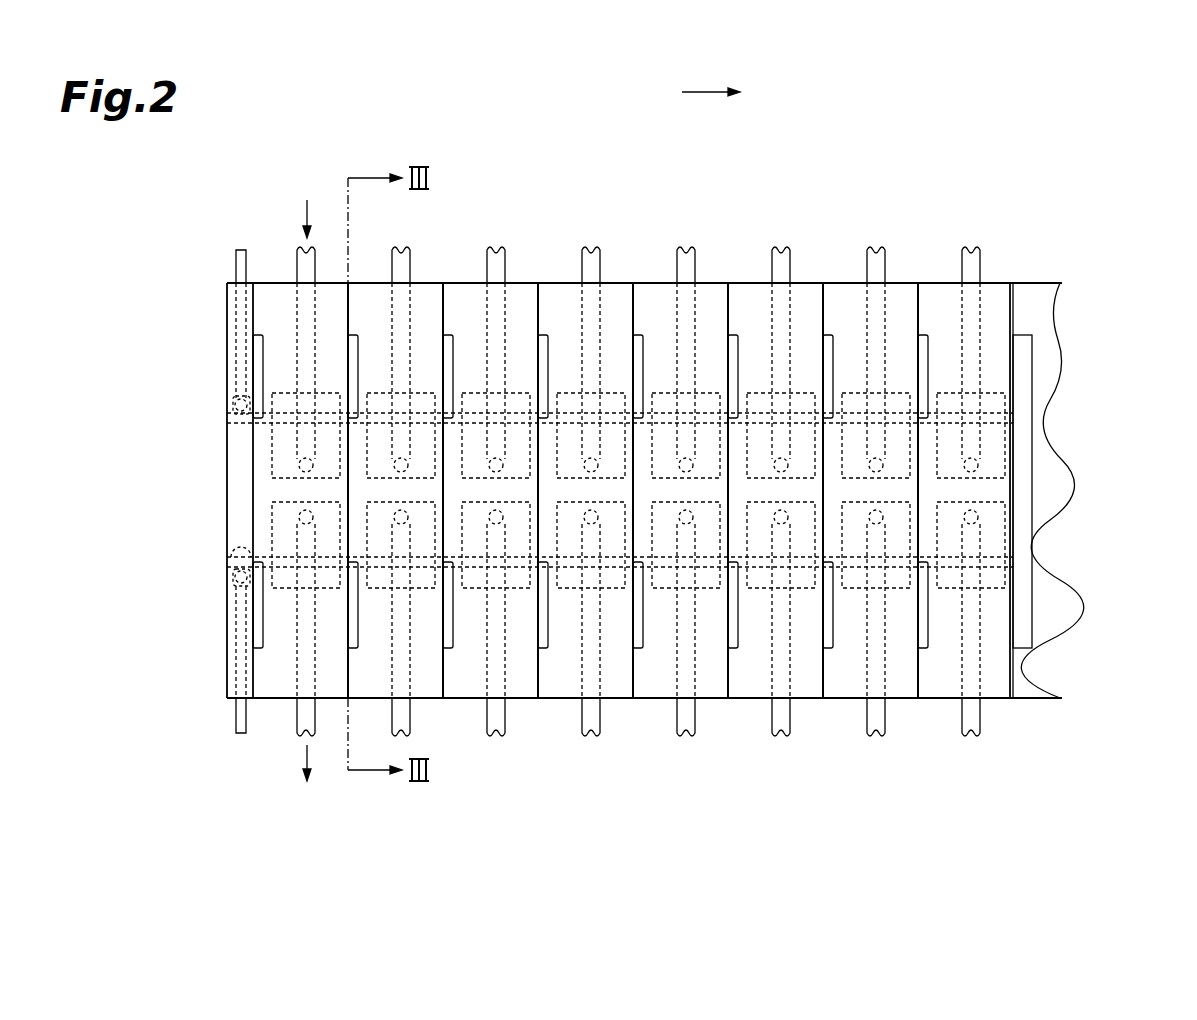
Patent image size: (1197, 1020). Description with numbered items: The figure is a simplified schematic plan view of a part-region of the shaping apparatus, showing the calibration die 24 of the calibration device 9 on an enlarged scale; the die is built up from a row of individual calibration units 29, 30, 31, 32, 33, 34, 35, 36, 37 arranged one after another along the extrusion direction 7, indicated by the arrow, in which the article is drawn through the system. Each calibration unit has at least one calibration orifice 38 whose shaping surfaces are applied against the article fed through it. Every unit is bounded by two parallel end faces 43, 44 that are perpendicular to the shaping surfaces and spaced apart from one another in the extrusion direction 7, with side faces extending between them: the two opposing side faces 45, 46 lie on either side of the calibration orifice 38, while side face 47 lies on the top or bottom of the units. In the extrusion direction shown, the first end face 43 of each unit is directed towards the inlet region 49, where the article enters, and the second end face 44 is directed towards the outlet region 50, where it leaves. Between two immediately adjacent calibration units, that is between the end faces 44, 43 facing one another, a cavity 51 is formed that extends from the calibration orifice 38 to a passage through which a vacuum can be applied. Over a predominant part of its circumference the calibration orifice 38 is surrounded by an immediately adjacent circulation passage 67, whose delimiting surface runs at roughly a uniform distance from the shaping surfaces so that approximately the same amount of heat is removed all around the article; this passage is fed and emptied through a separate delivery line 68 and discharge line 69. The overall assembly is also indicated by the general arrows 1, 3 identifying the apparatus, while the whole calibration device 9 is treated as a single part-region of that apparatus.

The energy storage device 1 is at (1078, 197).
The housing 3 is at (1050, 172).
The extrusion direction 7 is at (700, 93).
The calibration device 9 is at (1010, 195).
The calibration die 24 is at (335, 770).
The calibration unit 29 is at (233, 310).
The calibration unit 30 is at (327, 307).
The calibration unit 31 is at (418, 303).
The calibration unit 32 is at (516, 300).
The calibration unit 33 is at (610, 300).
The calibration unit 34 is at (662, 300).
The calibration unit 35 is at (751, 300).
The calibration unit 36 is at (846, 300).
The calibration unit 37 is at (946, 300).
The calibration orifice 38 is at (230, 555).
The first end face 43 is at (347, 312).
The second end face 44 is at (350, 302).
The side face 45 is at (280, 283).
The side face 46 is at (362, 699).
The side face 47 is at (430, 663).
The inlet region 49 is at (218, 426).
The outlet region 50 is at (1043, 467).
The cavity 51 is at (638, 350).
The circulation passage 67 is at (252, 426).
The delivery line 68 is at (273, 283).
The discharge line 69 is at (305, 723).